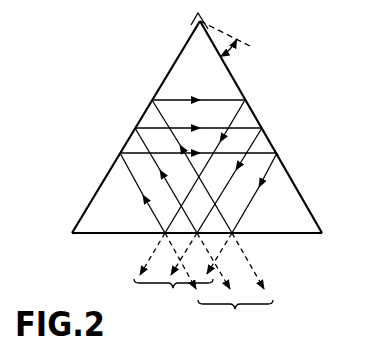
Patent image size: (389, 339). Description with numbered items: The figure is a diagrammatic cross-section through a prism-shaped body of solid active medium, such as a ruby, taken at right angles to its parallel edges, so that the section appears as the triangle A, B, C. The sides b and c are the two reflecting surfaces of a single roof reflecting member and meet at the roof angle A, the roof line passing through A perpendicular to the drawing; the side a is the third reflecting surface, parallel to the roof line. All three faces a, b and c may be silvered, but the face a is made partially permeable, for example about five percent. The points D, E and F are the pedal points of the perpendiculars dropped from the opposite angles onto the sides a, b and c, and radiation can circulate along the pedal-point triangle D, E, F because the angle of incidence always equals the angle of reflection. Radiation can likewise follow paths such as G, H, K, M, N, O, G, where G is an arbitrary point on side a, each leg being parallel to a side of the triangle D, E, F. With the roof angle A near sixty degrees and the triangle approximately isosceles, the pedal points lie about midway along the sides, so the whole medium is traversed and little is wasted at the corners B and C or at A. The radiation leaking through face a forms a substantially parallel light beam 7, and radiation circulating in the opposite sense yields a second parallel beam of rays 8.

The roof angle A is at (190, 18).
The corner B is at (330, 234).
The corner C is at (64, 233).
The third reflecting surface a is at (112, 236).
The reflecting surface b is at (101, 187).
The reflecting surface c is at (240, 90).
The point N is at (188, 94).
The pedal point E is at (188, 123).
The point H is at (188, 151).
The point O is at (254, 95).
The pedal point F is at (271, 123).
The point K is at (288, 153).
The point G is at (162, 236).
The pedal point D is at (199, 236).
The point M is at (236, 236).
The parallel light beam 7 is at (183, 275).
The parallel beam of rays 8 is at (219, 286).